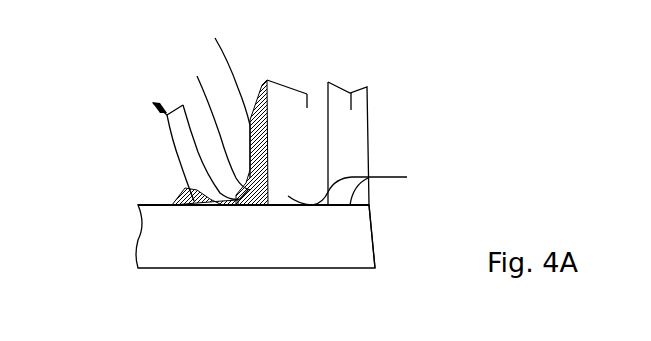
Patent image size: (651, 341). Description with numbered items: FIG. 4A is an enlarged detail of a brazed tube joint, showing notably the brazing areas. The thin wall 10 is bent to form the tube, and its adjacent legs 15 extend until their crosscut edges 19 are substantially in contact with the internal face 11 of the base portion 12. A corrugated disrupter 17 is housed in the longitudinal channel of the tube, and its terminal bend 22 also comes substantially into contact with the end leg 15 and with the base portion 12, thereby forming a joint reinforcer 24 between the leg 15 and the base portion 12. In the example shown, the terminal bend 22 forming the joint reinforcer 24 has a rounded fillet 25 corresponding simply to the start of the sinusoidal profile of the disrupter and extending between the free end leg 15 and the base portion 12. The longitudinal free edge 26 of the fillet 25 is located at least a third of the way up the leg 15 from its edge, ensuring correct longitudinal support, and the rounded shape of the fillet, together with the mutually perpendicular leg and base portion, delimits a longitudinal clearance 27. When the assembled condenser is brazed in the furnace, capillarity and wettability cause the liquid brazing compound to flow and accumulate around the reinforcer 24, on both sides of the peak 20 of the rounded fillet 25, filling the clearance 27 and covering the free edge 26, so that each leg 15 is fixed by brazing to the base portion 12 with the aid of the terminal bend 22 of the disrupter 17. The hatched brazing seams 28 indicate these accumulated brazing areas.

The thin wall 10 is at (161, 270).
The internal face 11 is at (168, 205).
The base portion 12 is at (202, 247).
The leg 15 is at (307, 94).
The disrupter 17 is at (153, 104).
The crosscut edge 19 is at (357, 183).
The peak 20 is at (185, 195).
The terminal bend 22 is at (211, 50).
The joint reinforcer 24 is at (271, 162).
The rounded fillet 25 is at (230, 207).
The longitudinal free edge 26 is at (228, 96).
The longitudinal clearance 27 is at (268, 182).
The liner layer 28 is at (256, 110).